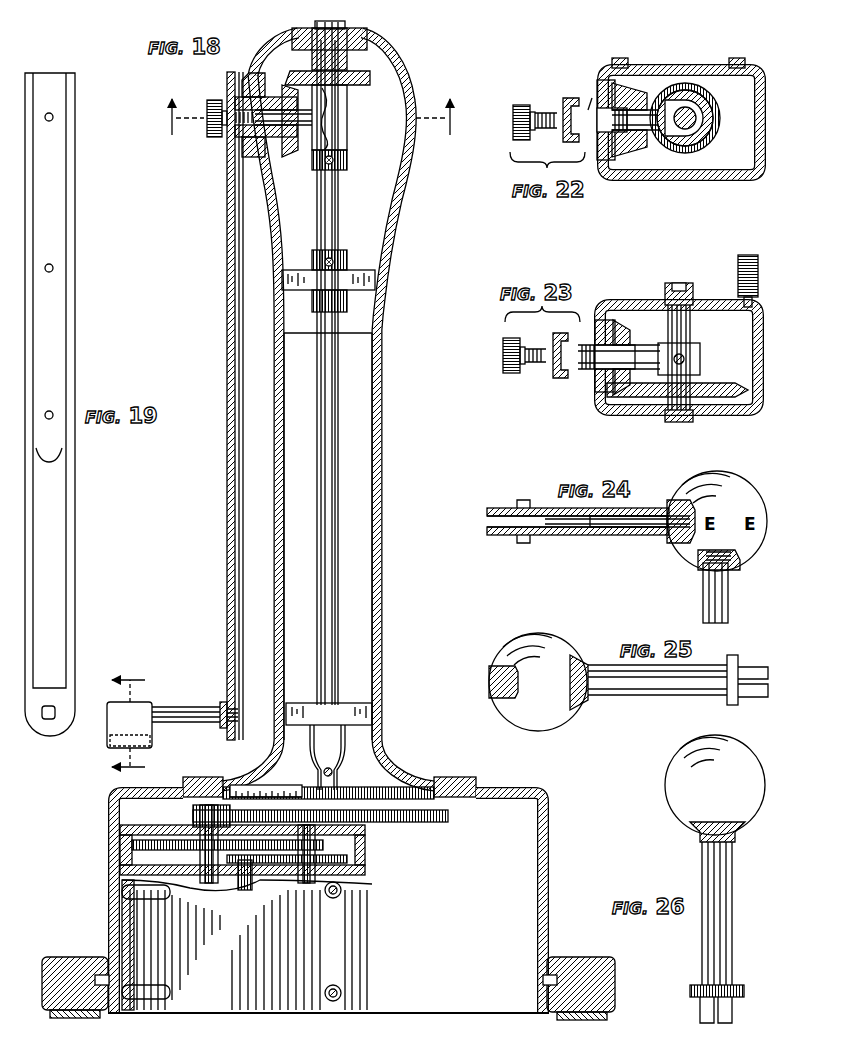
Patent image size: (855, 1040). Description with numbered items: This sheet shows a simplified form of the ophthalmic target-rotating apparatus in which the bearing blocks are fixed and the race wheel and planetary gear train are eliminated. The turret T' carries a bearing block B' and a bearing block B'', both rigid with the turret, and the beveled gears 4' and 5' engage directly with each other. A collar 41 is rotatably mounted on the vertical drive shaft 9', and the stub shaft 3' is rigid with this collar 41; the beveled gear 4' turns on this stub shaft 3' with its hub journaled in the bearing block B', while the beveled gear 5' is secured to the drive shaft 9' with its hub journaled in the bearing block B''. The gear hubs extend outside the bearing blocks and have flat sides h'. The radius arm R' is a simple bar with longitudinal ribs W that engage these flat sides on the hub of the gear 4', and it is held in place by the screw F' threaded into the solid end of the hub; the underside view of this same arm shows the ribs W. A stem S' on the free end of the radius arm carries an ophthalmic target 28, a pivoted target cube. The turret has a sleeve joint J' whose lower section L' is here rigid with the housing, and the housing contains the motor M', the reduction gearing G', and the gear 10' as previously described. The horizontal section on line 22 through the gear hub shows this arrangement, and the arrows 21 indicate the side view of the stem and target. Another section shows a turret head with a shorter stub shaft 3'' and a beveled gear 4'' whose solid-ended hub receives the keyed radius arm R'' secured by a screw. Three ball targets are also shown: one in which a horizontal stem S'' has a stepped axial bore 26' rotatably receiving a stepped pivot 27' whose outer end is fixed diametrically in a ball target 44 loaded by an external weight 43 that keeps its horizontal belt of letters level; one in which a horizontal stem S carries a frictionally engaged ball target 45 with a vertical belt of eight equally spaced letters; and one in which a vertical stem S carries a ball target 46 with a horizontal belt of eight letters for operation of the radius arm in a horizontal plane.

In FIG. 19, the radius arm R' is at (69, 404).
In FIG. 18, the radius arm R' is at (211, 406).
In FIG. 22, the radius arm R' is at (558, 112).
In FIG. 19, the longitudinal ribs W is at (49, 466).
In FIG. 18, the longitudinal ribs W is at (243, 232).
In FIG. 18, the section line 22— 22 is at (311, 130).
In FIG. 18, the section line 21 is at (139, 725).
In FIG. 18, the turret T' is at (329, 415).
In FIG. 18, the lower section L' is at (353, 418).
In FIG. 18, the sleeve joint J' is at (328, 522).
In FIG. 18, the bearing block B'' is at (354, 37).
In FIG. 18, the bearing block B' is at (253, 75).
In FIG. 18, the beveled gear 5' is at (333, 70).
In FIG. 22, the beveled gear 5' is at (698, 118).
In FIG. 18, the collar 41 is at (347, 120).
In FIG. 22, the collar 41 is at (700, 128).
In FIG. 18, the vertical drive shaft 9' is at (328, 406).
In FIG. 22, the vertical drive shaft 9' is at (711, 119).
In FIG. 18, the stub shaft 3' is at (273, 139).
In FIG. 22, the stub shaft 3' is at (637, 137).
In FIG. 18, the beveled gear 4' is at (296, 137).
In FIG. 22, the beveled gear 4' is at (629, 94).
In FIG. 18, the screw F' is at (212, 137).
In FIG. 22, the screw F' is at (523, 111).
In FIG. 18, the ophthalmic target 28 is at (153, 732).
In FIG. 18, the stem S' is at (195, 702).
In FIG. 18, the gear 10' is at (342, 817).
In FIG. 18, the reduction gearing G' is at (264, 847).
In FIG. 18, the motor M' is at (247, 945).
In FIG. 22, the flat sides h' is at (578, 87).
In FIG. 23, the radius arm R'' is at (554, 381).
In FIG. 23, the stub shaft 3'' is at (634, 337).
In FIG. 23, the beveled gear 4'' is at (616, 408).
In FIG. 24, the stepped axial bore 26' is at (578, 538).
In FIG. 24, the stem S'' is at (617, 551).
In FIG. 24, the stepped pivot 27' is at (629, 543).
In FIG. 24, the ball target 44 is at (687, 560).
In FIG. 24, the weight 43 is at (730, 610).
In FIG. 25, the ball target 45 is at (573, 712).
In FIG. 25, the stem S is at (678, 692).
In FIG. 26, the stem S is at (725, 932).
In FIG. 26, the ball target 46 is at (678, 820).